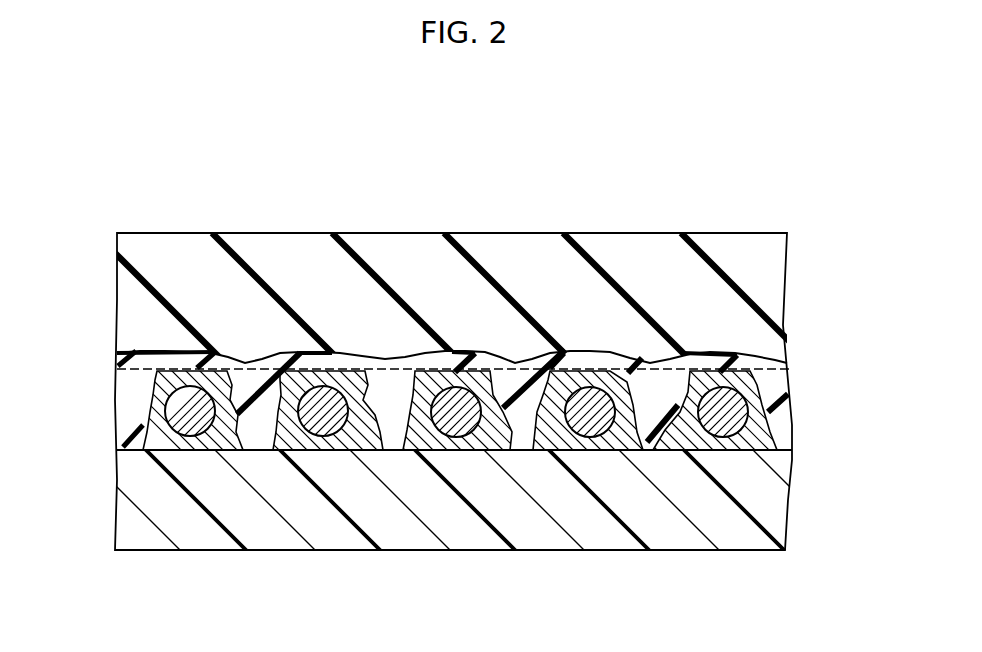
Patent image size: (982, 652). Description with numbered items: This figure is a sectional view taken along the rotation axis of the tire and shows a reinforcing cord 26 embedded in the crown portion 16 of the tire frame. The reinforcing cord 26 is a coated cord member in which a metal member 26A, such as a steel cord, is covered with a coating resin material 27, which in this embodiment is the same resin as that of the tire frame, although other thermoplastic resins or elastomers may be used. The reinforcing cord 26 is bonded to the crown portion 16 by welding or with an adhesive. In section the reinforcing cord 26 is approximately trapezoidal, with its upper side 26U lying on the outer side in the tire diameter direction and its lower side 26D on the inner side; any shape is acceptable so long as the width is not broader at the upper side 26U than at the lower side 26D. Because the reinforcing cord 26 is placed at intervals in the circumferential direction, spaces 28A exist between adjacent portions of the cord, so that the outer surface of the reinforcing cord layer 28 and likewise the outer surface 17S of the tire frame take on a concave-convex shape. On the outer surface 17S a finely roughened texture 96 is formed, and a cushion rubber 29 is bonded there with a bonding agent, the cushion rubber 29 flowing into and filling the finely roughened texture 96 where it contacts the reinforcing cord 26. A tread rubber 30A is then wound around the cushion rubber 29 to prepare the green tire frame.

The crown portion 16 is at (565, 525).
The outer surface of tire frame 17S is at (333, 367).
The reinforcing cord 26 is at (790, 452).
The metal member 26A is at (755, 384).
The upper side of reinforcing cord 26U is at (588, 372).
The lower side of reinforcing cord 26D is at (612, 432).
The coating resin material 27 is at (747, 372).
The reinforcing cord layer 28 is at (143, 372).
The spaces 28A is at (253, 430).
The cushion rubber 29 is at (153, 360).
The tread rubber 30A is at (614, 235).
The finely roughened texture 96 is at (510, 382).